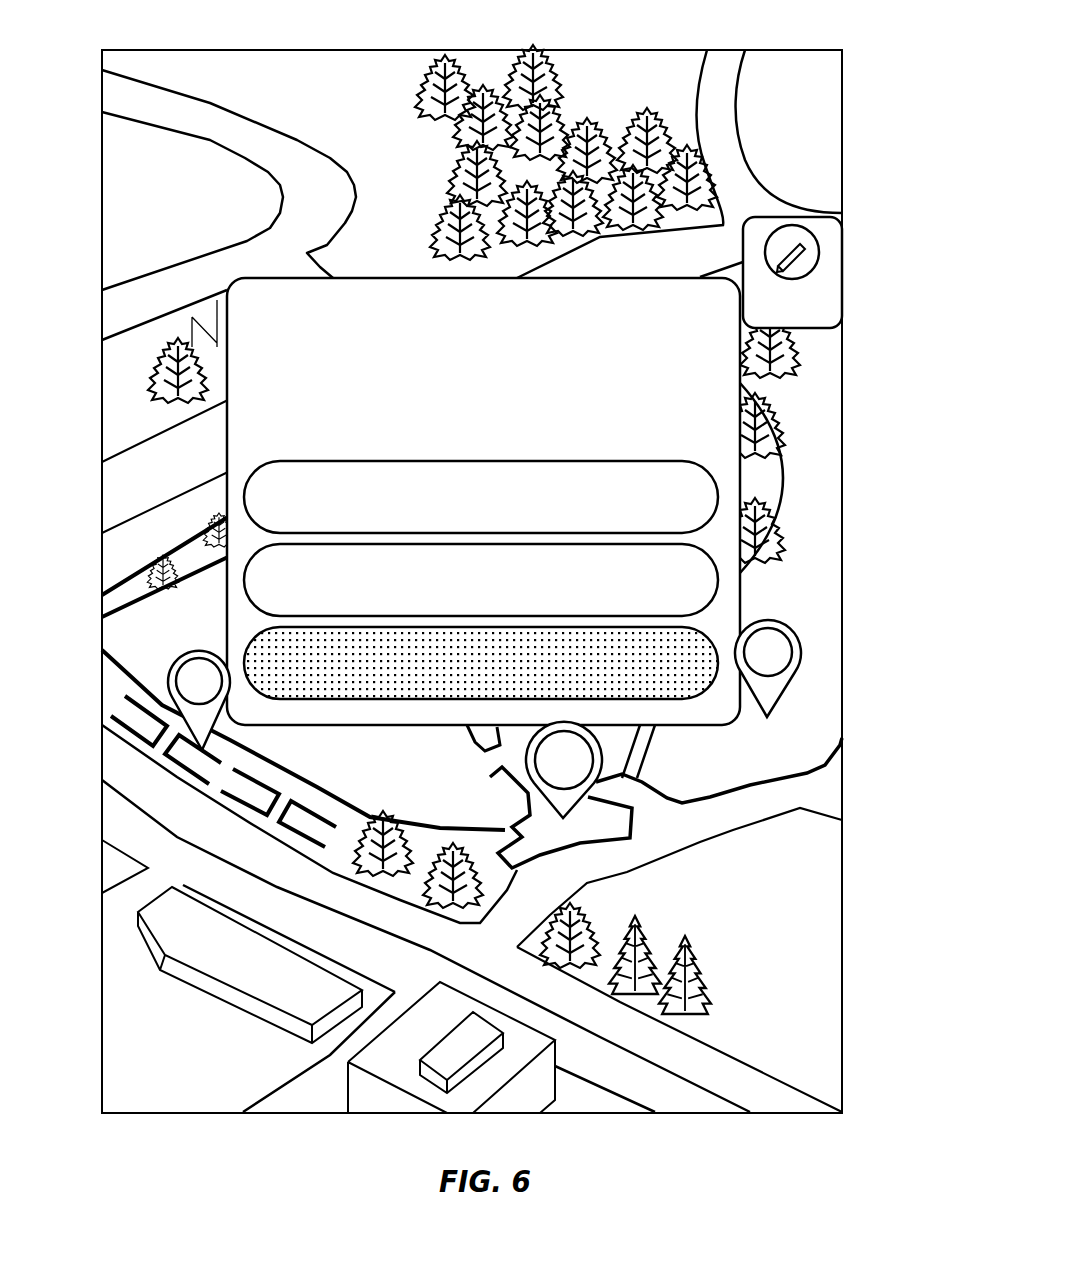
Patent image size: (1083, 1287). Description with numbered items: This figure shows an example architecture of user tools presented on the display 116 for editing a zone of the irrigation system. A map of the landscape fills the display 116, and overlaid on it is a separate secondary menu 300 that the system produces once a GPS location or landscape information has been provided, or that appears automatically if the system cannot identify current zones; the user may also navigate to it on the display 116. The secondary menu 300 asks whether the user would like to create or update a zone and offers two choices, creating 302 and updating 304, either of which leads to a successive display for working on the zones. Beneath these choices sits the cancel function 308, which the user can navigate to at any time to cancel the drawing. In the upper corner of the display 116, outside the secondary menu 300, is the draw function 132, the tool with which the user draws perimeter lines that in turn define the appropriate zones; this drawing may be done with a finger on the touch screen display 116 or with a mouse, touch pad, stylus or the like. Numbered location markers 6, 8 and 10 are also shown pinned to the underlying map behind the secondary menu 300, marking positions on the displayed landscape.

The secondary menu 300 is at (380, 503).
The creating 302 is at (273, 502).
The updating 304 is at (280, 592).
The cancel function 308 is at (283, 687).
The draw function 132 is at (823, 228).
The display 116 is at (842, 712).
The location marker 6 is at (564, 770).
The location marker 8 is at (199, 700).
The location marker 10 is at (768, 668).